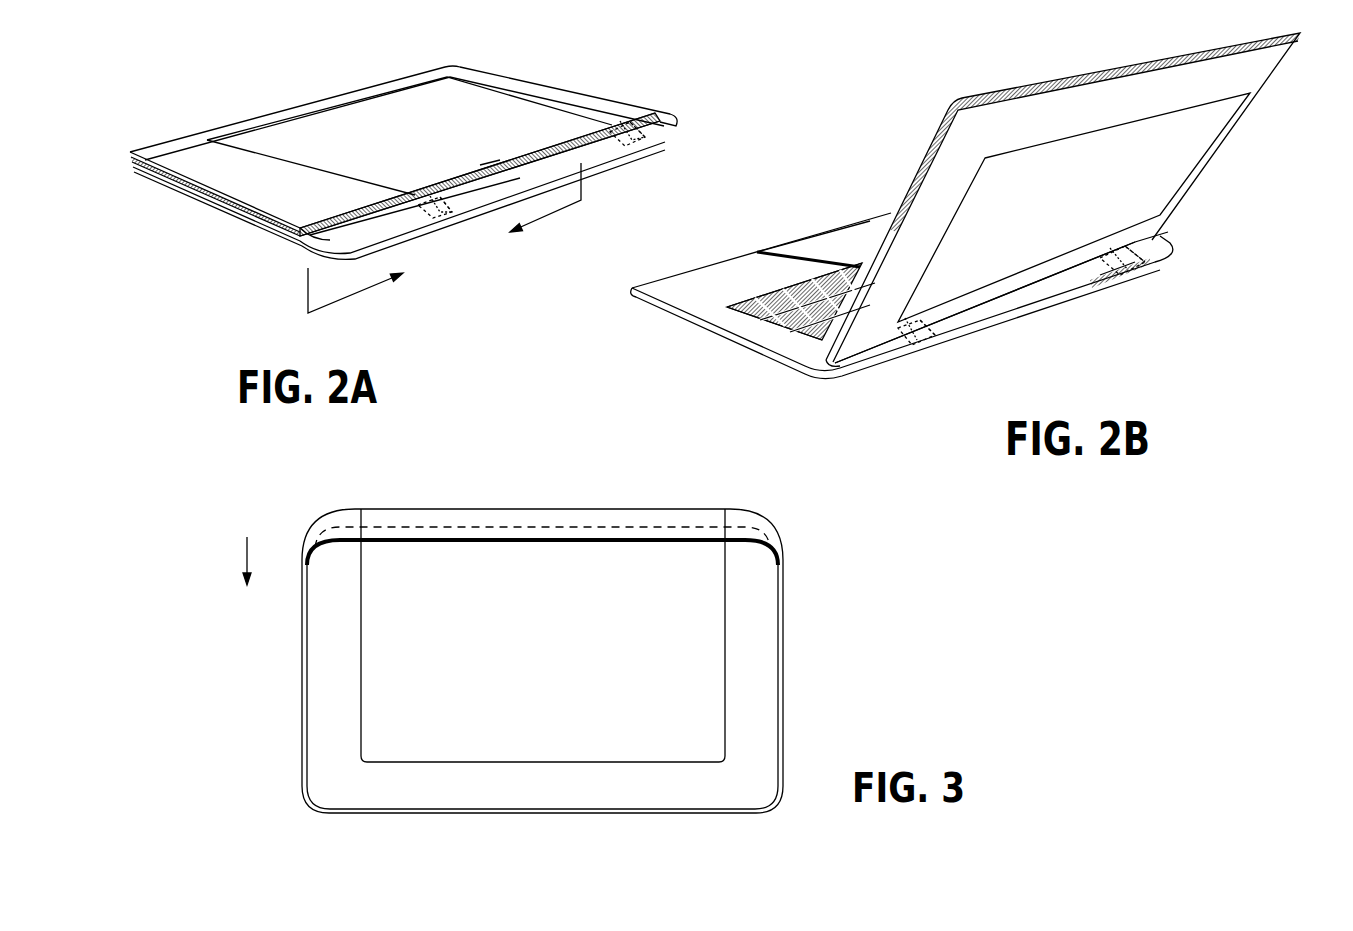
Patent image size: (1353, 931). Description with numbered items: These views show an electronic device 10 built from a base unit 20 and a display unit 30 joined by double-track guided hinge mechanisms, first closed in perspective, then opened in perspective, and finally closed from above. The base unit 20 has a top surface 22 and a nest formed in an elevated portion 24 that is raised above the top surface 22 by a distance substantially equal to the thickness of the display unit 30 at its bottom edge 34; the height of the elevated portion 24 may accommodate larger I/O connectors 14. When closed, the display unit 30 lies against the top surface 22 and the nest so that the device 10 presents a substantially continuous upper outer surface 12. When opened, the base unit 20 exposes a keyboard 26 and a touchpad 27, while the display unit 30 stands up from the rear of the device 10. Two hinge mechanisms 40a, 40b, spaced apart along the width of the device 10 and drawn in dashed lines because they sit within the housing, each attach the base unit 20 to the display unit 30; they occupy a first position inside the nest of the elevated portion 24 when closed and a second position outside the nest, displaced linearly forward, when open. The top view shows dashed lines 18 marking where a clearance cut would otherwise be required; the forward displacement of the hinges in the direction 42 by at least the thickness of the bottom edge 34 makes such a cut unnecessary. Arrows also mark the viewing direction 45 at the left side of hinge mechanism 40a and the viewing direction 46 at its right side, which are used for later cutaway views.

In FIG. 2A, the electronic device 10 is at (630, 66).
In FIG. 2B, the electronic device 10 is at (1232, 253).
In FIG. 3, the electronic device 10 is at (832, 570).
In FIG. 2A, the substantially continuous upper outer surface 12 is at (250, 143).
In FIG. 3, the substantially continuous upper outer surface 12 is at (757, 745).
In FIG. 2A, the I/O connectors 14 is at (660, 176).
In FIG. 2B, the I/O connectors 14 is at (1158, 307).
In FIG. 3, the clearance cut 18 is at (527, 525).
In FIG. 2A, the base unit 20 is at (265, 225).
In FIG. 2B, the base unit 20 is at (717, 337).
In FIG. 2B, the top surface 22 is at (672, 295).
In FIG. 2A, the elevated portion 24 is at (582, 147).
In FIG. 2B, the elevated portion 24 is at (875, 358).
In FIG. 3, the elevated portion 24 is at (337, 520).
In FIG. 2B, the keyboard 26 is at (795, 318).
In FIG. 2B, the touchpad 27 is at (827, 250).
In FIG. 2A, the display unit 30 is at (245, 197).
In FIG. 2B, the display unit 30 is at (923, 138).
In FIG. 2A, the bottom edge 34 is at (340, 222).
In FIG. 2A, the double-track guided hinge mechanism 40a is at (447, 217).
In FIG. 2B, the double-track guided hinge mechanism 40a is at (923, 347).
In FIG. 2A, the double-track guided hinge mechanism 40b is at (633, 138).
In FIG. 2B, the double-track guided hinge mechanism 40b is at (1107, 263).
In FIG. 3, the direction 42 is at (247, 545).
In FIG. 2A, the direction 45 is at (556, 215).
In FIG. 2A, the direction 46 is at (355, 293).